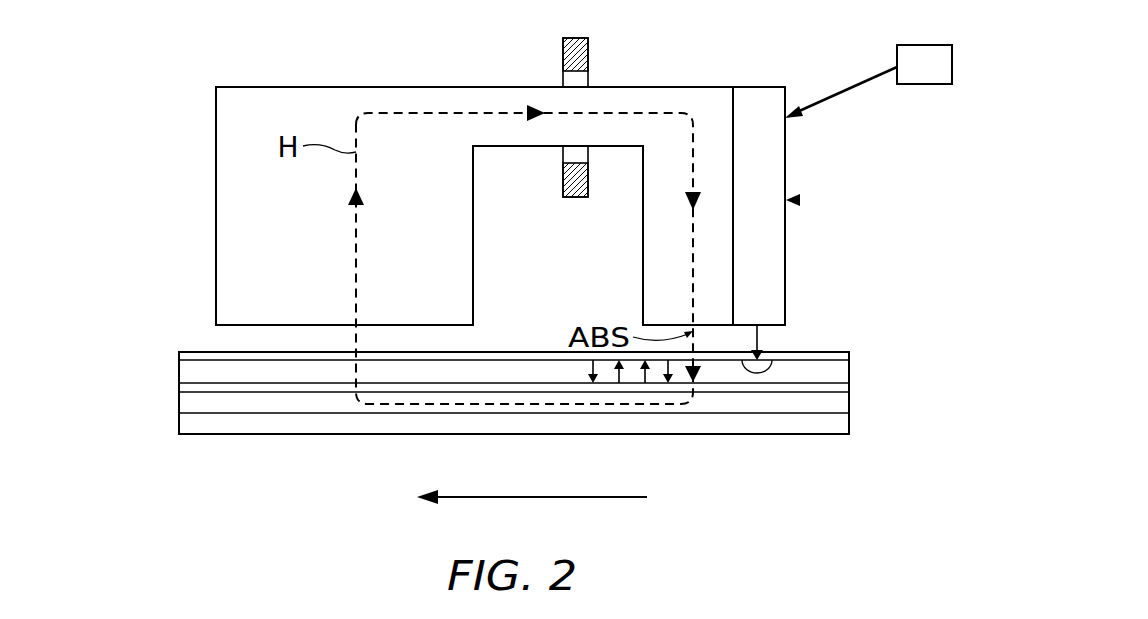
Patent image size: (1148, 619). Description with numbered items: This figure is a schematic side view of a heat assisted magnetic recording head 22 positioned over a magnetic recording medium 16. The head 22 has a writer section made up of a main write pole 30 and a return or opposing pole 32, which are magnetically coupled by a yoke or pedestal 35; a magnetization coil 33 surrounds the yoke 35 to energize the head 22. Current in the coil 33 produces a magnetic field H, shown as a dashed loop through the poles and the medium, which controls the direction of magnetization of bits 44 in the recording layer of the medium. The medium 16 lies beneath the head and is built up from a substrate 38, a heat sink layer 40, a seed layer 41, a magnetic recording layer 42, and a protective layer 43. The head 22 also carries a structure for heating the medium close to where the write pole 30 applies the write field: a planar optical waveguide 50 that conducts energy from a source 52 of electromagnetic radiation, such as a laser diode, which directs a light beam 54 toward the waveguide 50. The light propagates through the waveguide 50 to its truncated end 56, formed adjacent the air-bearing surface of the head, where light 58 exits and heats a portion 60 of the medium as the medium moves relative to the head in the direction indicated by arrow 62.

The magnetic recording medium 16 is at (133, 327).
The HAMR recording head 22 is at (172, 103).
The main write pole 30 is at (652, 252).
The return pole 32 is at (228, 184).
The magnetization coil 33 is at (562, 52).
The yoke 35 is at (642, 98).
The substrate 38 is at (332, 425).
The heat sink layer 40 is at (185, 403).
The seed layer 41 is at (185, 386).
The magnetic recording layer 42 is at (188, 373).
The protective layer 43 is at (192, 357).
The bits 44 is at (588, 370).
The planar optical waveguide 50 is at (800, 200).
The source of electromagnetic radiation 52 is at (920, 55).
The light beam 54 is at (840, 95).
The truncated end 56 is at (778, 332).
The light 58 is at (760, 342).
The heated portion of the medium 60 is at (772, 372).
The arrow 62 is at (495, 500).